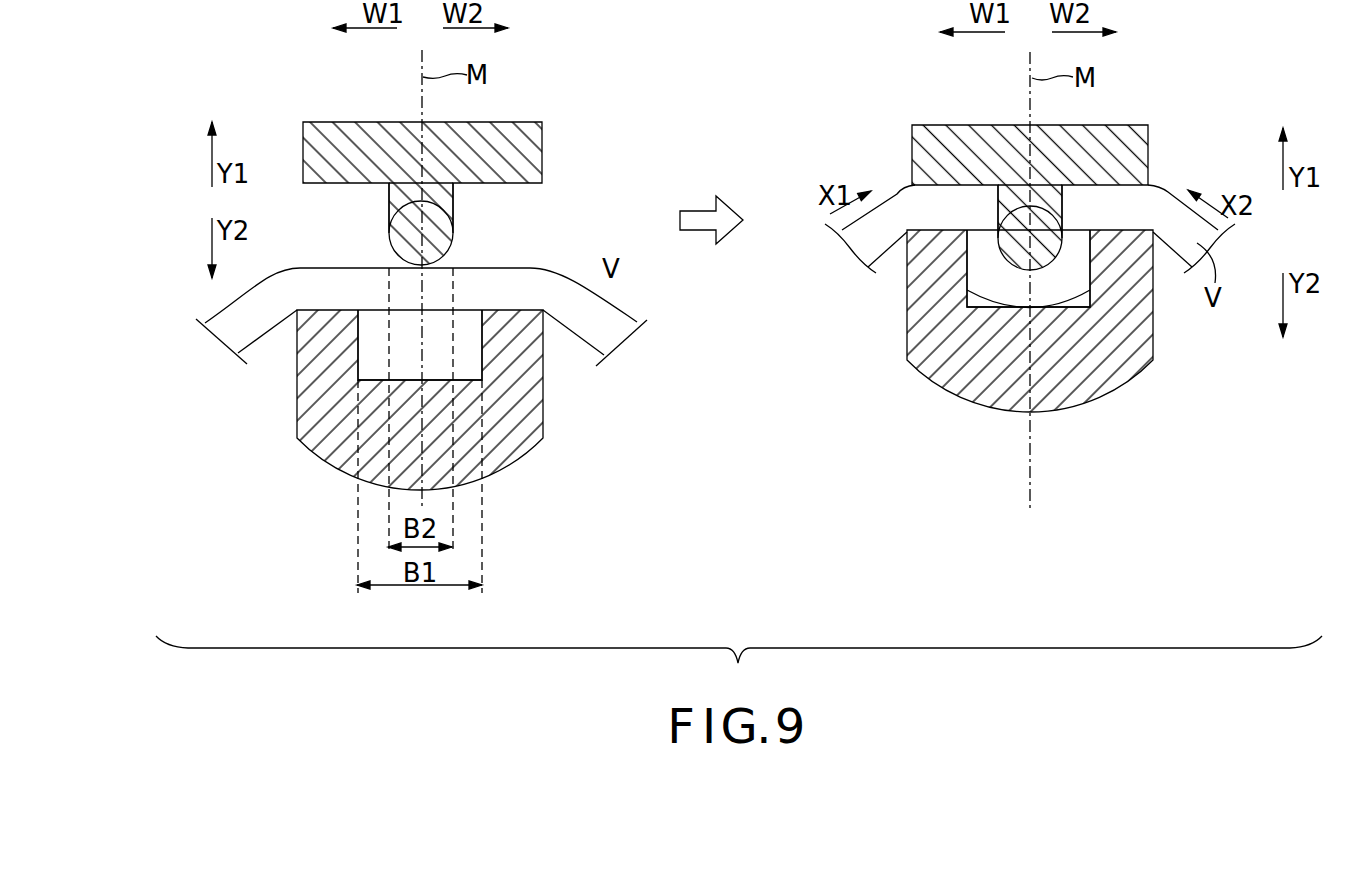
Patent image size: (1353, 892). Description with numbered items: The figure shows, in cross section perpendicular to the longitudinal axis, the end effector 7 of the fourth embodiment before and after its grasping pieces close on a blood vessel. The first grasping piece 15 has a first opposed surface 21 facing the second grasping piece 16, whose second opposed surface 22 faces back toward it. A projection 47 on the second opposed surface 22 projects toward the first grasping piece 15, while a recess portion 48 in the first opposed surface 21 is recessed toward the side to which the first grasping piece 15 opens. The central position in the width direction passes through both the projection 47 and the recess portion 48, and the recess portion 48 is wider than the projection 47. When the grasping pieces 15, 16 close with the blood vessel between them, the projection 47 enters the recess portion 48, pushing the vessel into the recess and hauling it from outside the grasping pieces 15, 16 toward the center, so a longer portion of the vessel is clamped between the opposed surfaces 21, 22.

The end effector 7 is at (580, 82).
The first grasping piece 15 is at (535, 452).
The second grasping piece 16 is at (548, 142).
The first opposed surface 21 is at (513, 305).
The second opposed surface 22 is at (504, 192).
The projection 47 is at (412, 216).
The recess portion 48 is at (482, 380).